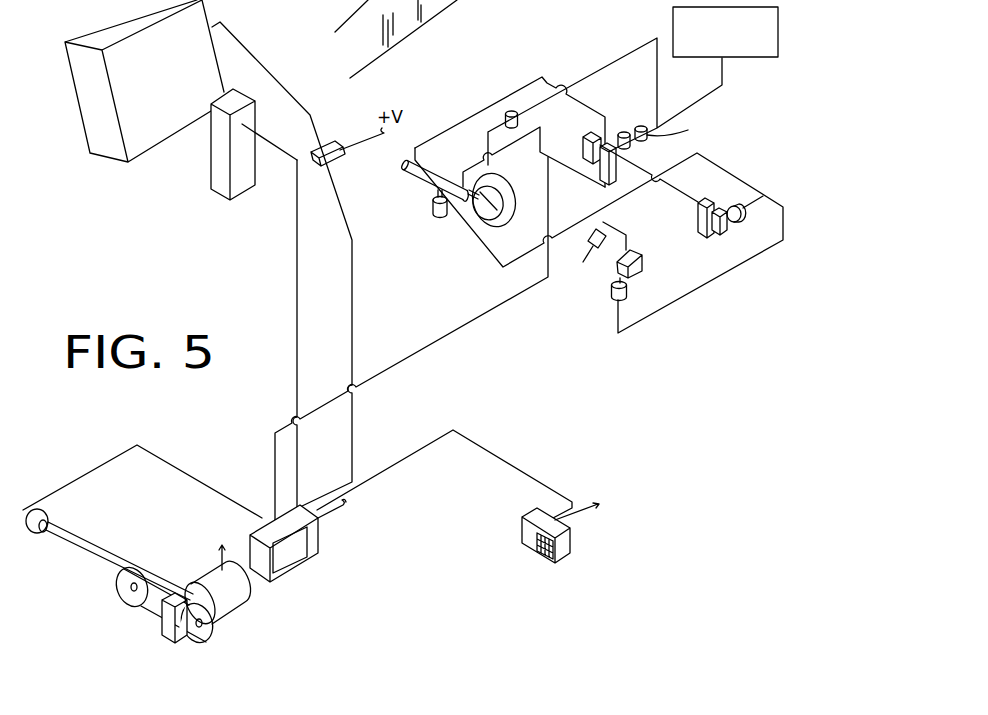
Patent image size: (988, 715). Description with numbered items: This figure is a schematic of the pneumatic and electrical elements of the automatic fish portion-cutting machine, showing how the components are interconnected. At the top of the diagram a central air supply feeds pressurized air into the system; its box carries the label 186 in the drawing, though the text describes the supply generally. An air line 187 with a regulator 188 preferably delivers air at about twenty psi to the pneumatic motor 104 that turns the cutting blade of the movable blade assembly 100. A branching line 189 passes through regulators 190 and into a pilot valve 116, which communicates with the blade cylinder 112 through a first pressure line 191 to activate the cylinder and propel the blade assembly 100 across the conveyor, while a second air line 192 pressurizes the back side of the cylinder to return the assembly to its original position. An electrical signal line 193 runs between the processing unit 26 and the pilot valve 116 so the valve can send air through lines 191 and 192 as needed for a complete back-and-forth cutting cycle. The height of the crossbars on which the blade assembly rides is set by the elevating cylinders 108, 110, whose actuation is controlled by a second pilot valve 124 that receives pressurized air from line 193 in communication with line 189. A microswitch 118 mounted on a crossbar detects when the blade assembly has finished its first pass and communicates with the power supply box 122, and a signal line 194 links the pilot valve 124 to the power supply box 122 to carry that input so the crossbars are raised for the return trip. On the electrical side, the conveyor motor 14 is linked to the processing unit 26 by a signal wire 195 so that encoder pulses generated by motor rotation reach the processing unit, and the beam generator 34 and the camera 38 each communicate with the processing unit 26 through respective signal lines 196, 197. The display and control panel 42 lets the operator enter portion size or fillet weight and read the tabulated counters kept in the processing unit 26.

The conveyor motor 14 is at (220, 602).
The processing unit 26 is at (312, 550).
The beam generator 34 is at (108, 168).
The camera 38 is at (218, 183).
The display and control panel 42 is at (563, 552).
The movable blade assembly 100 is at (505, 193).
The pneumatic motor 104 is at (483, 210).
The elevating cylinder 108 is at (610, 300).
The elevating cylinder 110 is at (437, 215).
The blade cylinder 112 is at (427, 180).
The pilot valve 116 is at (615, 170).
The microswitch 118 is at (600, 242).
The power supply box 122 is at (632, 250).
The pilot valve 124 is at (715, 238).
The air supply 186 is at (757, 58).
The air line 187 is at (643, 40).
The regulator 188 is at (512, 112).
The branching line 189 is at (687, 124).
The regulators 190 is at (640, 127).
The first pressure line 191 is at (482, 110).
The second air line 192 is at (477, 160).
The electrical signal line 193 is at (683, 183).
The signal line 194 is at (663, 257).
The signal wire 195 is at (163, 460).
The signal line 196 is at (353, 319).
The signal line 197 is at (296, 289).